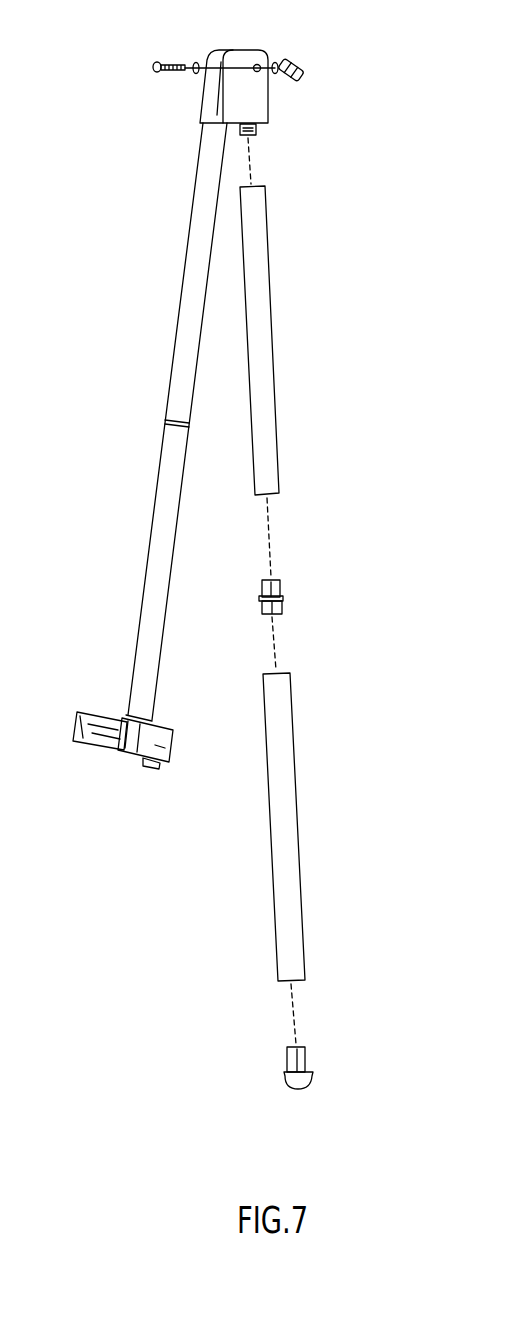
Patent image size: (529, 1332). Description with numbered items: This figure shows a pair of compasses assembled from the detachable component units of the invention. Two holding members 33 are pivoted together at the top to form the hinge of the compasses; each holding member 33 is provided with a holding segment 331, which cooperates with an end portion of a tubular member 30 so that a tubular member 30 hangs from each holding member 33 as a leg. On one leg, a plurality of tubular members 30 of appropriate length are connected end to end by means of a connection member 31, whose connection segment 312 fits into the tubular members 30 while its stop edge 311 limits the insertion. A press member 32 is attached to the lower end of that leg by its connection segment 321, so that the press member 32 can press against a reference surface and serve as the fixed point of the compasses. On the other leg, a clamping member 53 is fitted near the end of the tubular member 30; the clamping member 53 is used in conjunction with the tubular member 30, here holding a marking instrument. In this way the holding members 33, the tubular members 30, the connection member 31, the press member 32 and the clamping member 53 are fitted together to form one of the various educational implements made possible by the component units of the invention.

The tubular member 30 is at (181, 388).
The connection member 31 is at (288, 573).
The stop edge 311 is at (283, 597).
The connection segment 312 is at (281, 604).
The press member 32 is at (299, 1071).
The connection segment 321 is at (306, 1060).
The holding member 33 is at (215, 85).
The holding segment 331 is at (250, 136).
The clamping member 53 is at (85, 742).